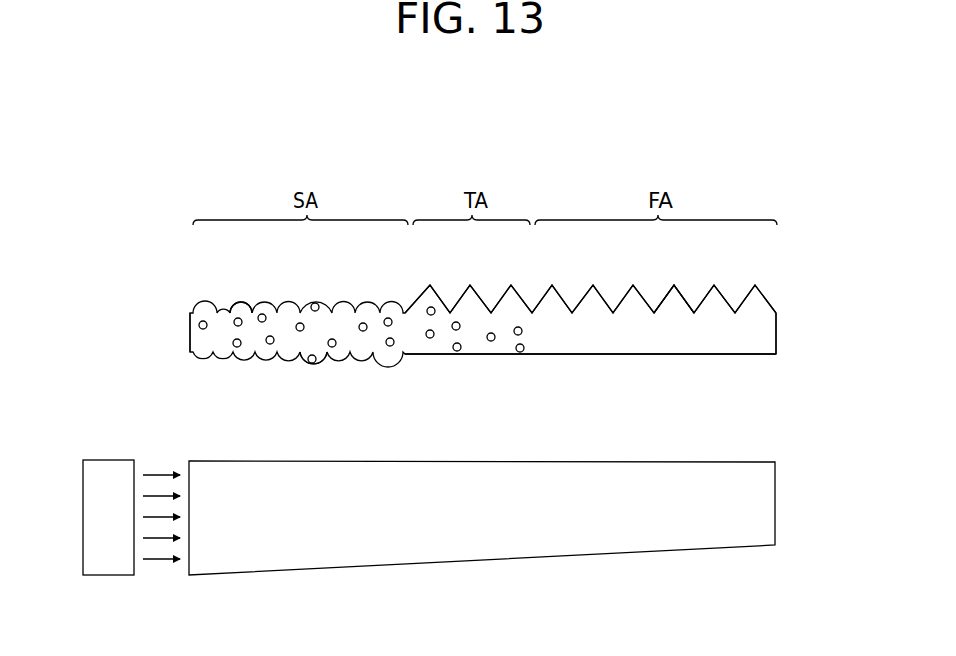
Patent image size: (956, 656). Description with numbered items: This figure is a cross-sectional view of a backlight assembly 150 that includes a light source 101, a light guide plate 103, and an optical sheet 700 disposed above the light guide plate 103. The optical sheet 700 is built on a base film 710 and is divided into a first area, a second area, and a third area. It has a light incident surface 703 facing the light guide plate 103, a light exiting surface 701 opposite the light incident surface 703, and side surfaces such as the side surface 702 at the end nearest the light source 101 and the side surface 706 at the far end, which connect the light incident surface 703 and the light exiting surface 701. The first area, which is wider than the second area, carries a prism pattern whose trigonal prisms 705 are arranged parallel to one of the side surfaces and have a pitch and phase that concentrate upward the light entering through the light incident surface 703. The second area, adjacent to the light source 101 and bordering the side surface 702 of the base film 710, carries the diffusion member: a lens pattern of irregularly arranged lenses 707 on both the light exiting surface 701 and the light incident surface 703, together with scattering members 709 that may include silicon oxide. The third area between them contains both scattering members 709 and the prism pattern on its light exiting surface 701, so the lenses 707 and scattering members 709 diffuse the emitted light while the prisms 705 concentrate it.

The backlight assembly 150 is at (384, 172).
The optical sheet 700 is at (729, 345).
The light exiting surface 701 is at (770, 297).
The side surface 702 is at (190, 318).
The light incident surface 703 is at (648, 355).
The prism 705 is at (689, 300).
The side surface 706 is at (777, 329).
The lens 707 is at (240, 301).
The scattering member 709 is at (311, 364).
The base film 710 is at (160, 300).
The light guide plate 103 is at (770, 500).
The light source 101 is at (105, 574).